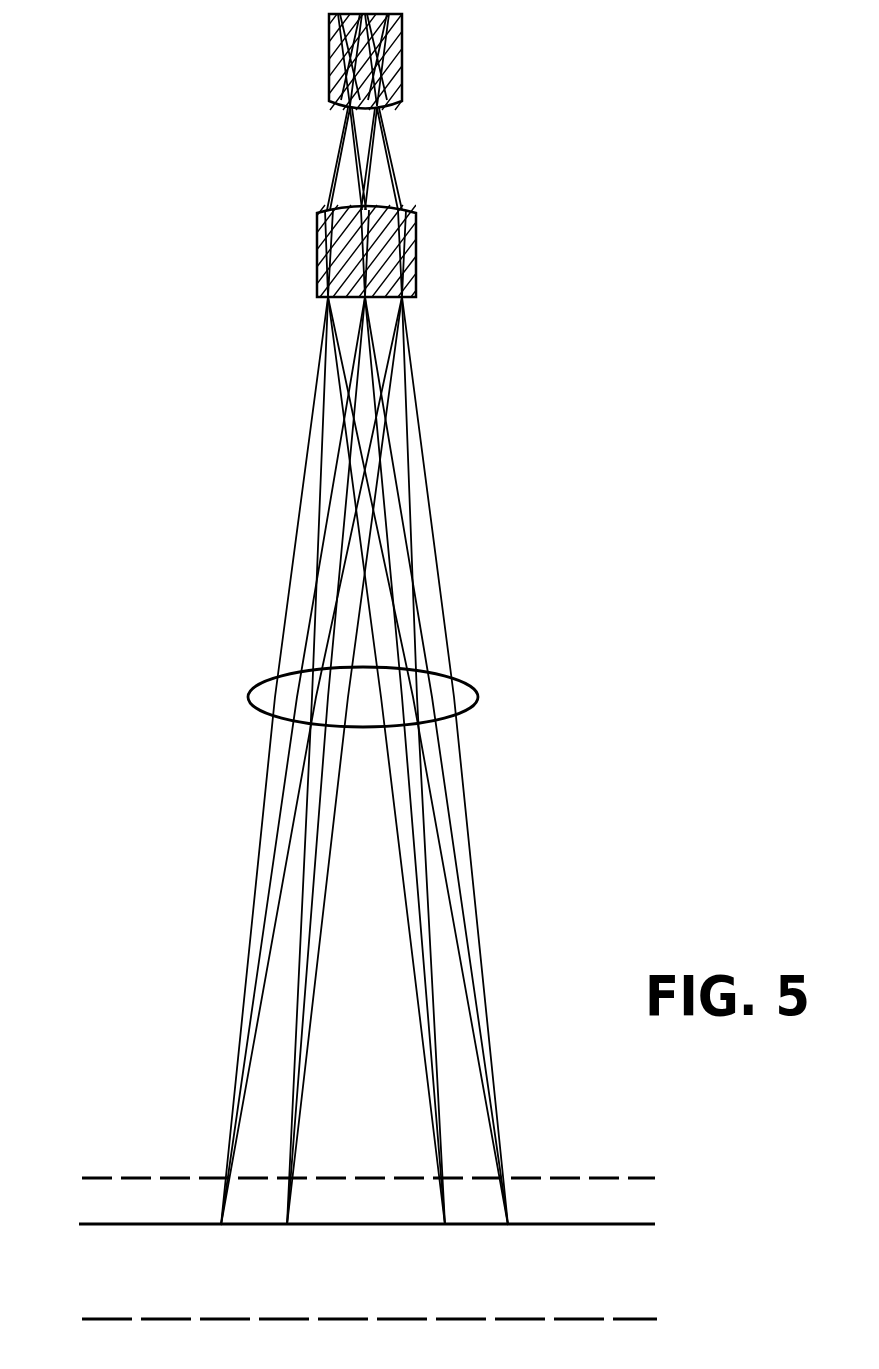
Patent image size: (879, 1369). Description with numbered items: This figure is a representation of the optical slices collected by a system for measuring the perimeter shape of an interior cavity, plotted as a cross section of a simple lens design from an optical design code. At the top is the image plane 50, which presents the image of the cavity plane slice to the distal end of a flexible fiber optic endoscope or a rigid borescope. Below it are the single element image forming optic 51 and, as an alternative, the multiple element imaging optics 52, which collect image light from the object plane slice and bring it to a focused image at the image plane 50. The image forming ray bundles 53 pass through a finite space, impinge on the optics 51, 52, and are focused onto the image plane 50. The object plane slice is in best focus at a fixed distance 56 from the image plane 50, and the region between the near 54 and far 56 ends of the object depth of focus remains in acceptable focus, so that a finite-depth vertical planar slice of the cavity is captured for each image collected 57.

The image plane 50 is at (403, 14).
The single element image forming optic 51 is at (402, 68).
The multiple element imaging optics 52 is at (420, 258).
The image forming ray bundles 53 is at (463, 682).
The near end of the object depth of focus 54 is at (632, 1179).
The fixed distance / far end of the object depth of focus 56 is at (640, 1223).
The image collected 57 is at (638, 1319).